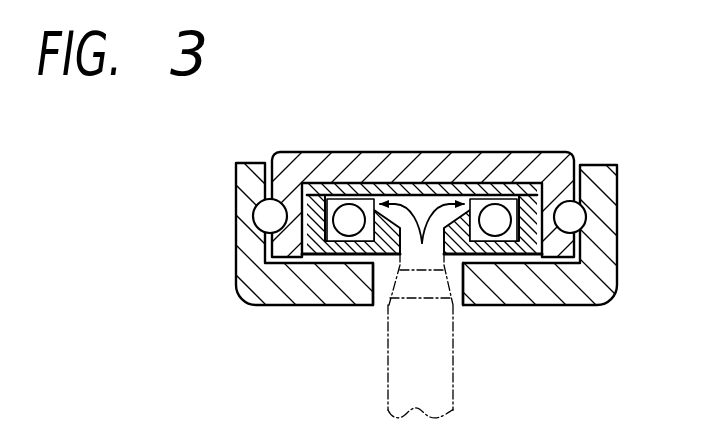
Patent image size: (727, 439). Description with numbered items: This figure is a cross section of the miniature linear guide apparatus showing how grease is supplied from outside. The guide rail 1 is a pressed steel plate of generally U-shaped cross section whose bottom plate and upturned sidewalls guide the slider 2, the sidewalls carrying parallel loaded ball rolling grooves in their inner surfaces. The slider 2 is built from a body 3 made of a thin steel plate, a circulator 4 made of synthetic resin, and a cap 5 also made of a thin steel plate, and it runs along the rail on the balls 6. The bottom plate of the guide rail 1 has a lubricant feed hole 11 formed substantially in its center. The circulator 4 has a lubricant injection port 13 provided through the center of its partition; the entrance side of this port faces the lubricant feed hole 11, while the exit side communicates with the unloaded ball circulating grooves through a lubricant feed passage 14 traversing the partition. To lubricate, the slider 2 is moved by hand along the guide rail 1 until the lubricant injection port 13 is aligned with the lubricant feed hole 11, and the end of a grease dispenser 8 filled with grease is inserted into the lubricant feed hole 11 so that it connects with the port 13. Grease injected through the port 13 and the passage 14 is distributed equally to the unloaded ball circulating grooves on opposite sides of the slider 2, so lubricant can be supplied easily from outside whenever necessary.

The guide rail 1 is at (627, 282).
The slider 2 is at (506, 148).
The body 3 is at (549, 160).
The circulator 4 is at (318, 262).
The cap 5 is at (410, 182).
The balls 6 is at (571, 217).
The grease dispenser 8 is at (456, 391).
The lubricant feed hole 11 is at (378, 288).
The lubricant injection port 13 is at (461, 306).
The lubricant feed passage 14 is at (437, 203).